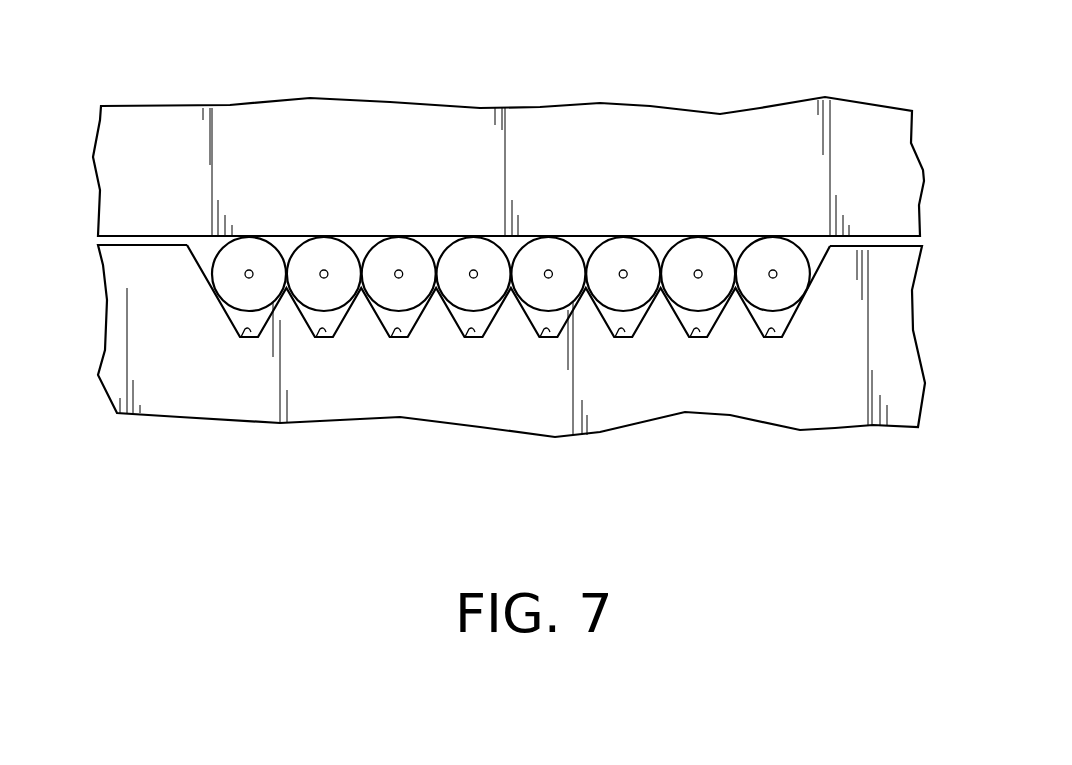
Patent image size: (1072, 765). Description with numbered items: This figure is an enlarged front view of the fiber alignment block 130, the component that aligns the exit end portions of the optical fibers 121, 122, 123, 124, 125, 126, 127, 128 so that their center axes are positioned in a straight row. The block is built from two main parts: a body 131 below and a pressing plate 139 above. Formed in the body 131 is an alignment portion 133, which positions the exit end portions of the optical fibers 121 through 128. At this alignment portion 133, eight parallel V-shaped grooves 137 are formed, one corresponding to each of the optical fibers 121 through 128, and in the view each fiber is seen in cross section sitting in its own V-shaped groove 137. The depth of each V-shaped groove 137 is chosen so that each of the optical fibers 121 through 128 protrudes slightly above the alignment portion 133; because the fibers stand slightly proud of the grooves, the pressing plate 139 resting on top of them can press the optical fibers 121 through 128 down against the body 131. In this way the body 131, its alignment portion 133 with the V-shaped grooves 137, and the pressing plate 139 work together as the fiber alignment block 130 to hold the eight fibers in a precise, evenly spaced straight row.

The optical fiber 121 is at (248, 249).
The optical fiber 122 is at (323, 249).
The optical fiber 123 is at (398, 249).
The optical fiber 124 is at (473, 249).
The optical fiber 125 is at (548, 249).
The optical fiber 126 is at (623, 249).
The optical fiber 127 is at (698, 249).
The optical fiber 128 is at (773, 249).
The fiber alignment block 130 is at (999, 165).
The body 131 is at (906, 273).
The alignment portion 133 is at (822, 295).
The V-shaped groove 137 is at (250, 331).
The pressing plate 139 is at (902, 199).